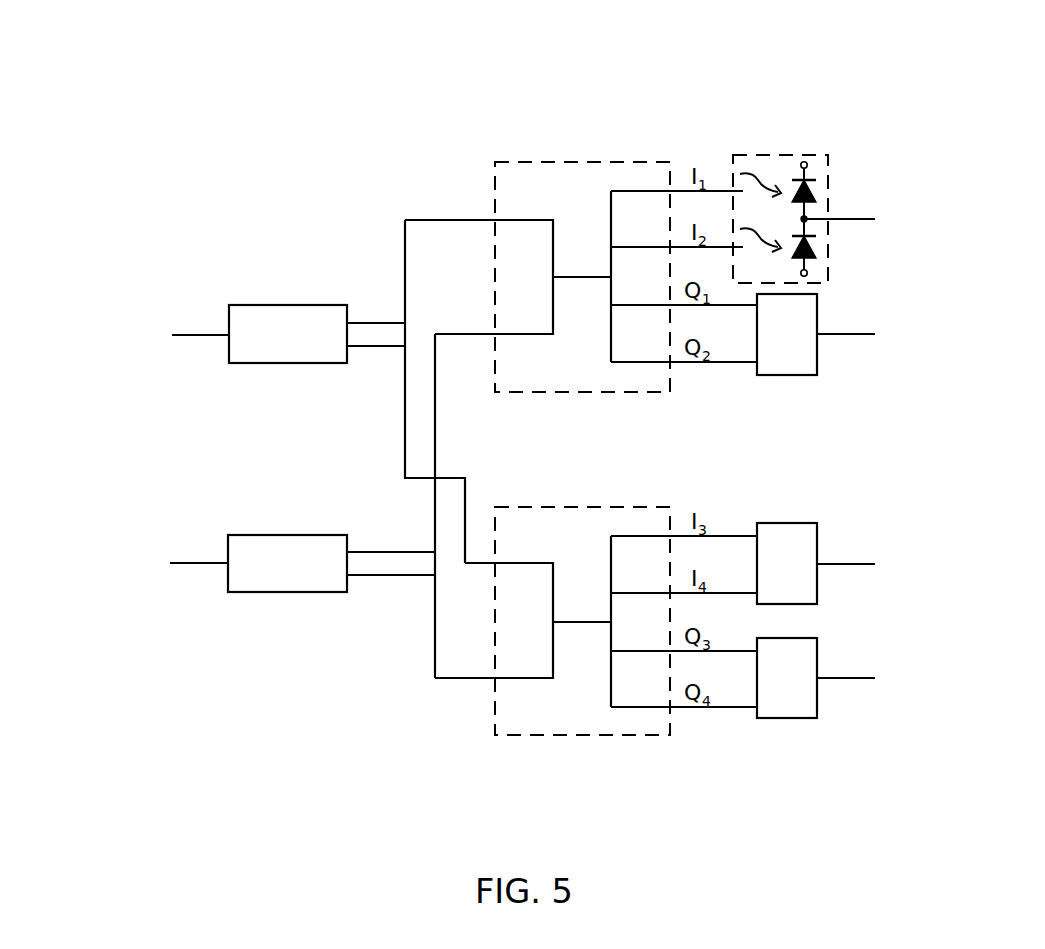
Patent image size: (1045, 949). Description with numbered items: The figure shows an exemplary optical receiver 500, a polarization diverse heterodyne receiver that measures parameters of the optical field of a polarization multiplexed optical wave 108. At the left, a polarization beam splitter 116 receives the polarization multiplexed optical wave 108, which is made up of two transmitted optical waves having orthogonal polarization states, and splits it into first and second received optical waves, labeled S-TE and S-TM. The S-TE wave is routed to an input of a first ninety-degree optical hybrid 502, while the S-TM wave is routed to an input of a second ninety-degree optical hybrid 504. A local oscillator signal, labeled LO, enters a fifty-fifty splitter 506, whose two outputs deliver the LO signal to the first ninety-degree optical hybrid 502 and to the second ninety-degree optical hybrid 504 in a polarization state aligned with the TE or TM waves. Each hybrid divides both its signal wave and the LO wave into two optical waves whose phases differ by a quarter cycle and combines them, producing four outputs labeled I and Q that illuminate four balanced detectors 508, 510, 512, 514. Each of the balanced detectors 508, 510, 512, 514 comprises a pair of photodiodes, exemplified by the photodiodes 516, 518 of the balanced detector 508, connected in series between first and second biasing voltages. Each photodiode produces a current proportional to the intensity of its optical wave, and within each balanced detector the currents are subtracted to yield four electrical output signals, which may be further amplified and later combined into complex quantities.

The optical receiver 500 is at (798, 108).
The first 90° optical hybrid 502 is at (580, 162).
The second 90° optical hybrid 504 is at (580, 507).
The 50/50 splitter 506 is at (290, 592).
The balanced detector 508 is at (782, 155).
The balanced detector 510 is at (787, 375).
The balanced detector 512 is at (787, 523).
The balanced detector 514 is at (787, 718).
The photodiode 516 is at (811, 172).
The photodiode 518 is at (812, 258).
The polarization multiplexed optical wave 108 is at (131, 321).
The PBS 116 is at (290, 363).